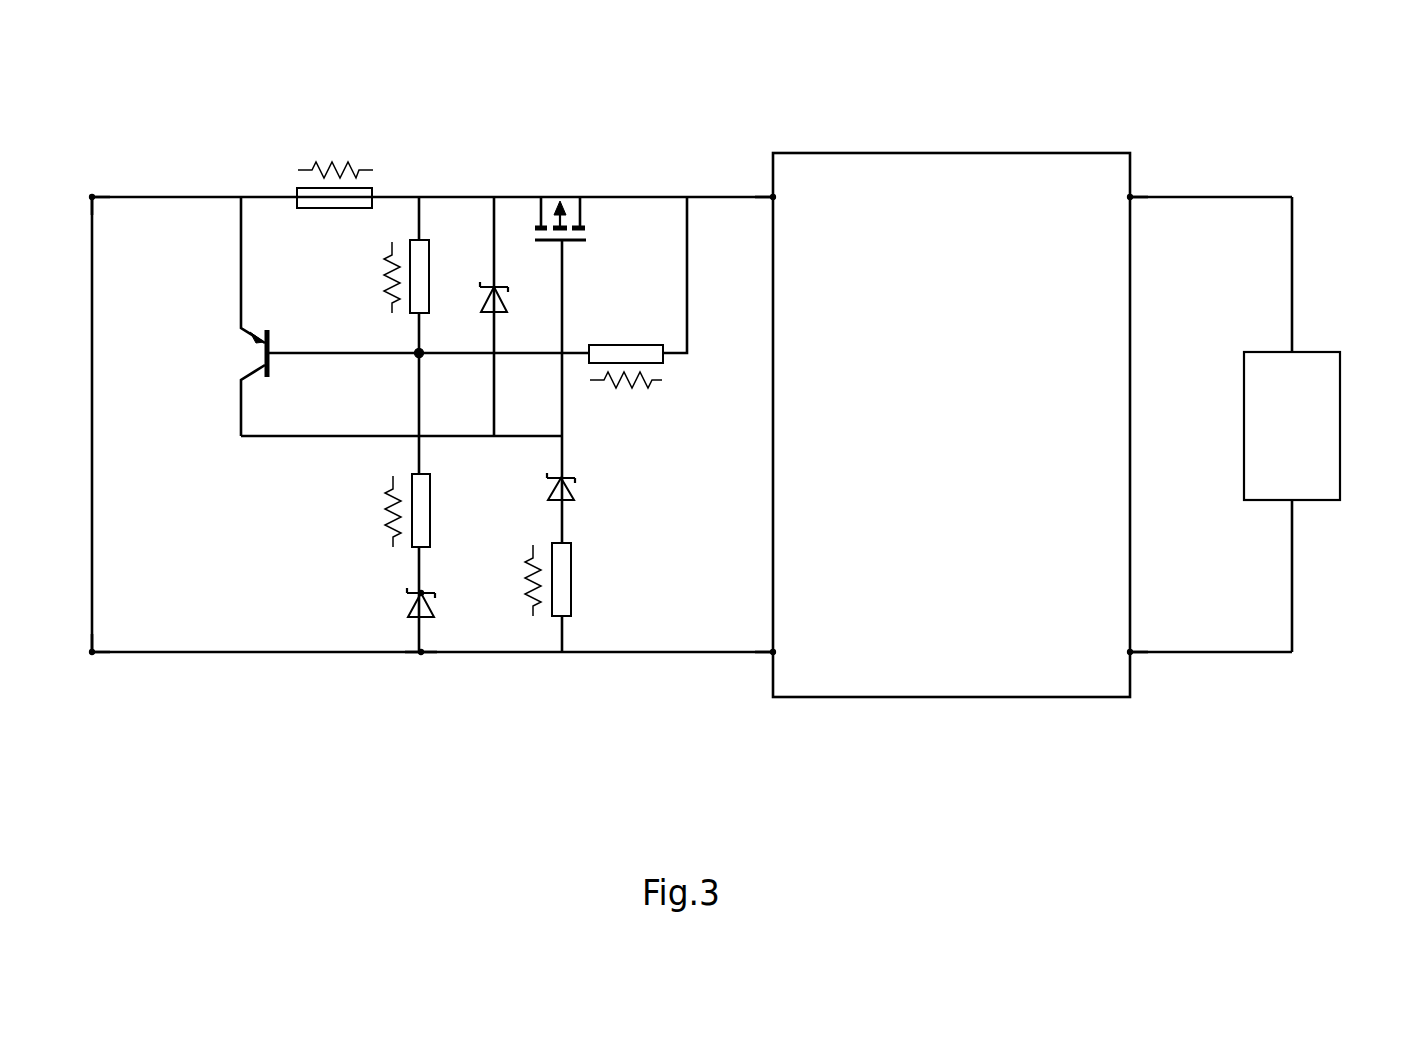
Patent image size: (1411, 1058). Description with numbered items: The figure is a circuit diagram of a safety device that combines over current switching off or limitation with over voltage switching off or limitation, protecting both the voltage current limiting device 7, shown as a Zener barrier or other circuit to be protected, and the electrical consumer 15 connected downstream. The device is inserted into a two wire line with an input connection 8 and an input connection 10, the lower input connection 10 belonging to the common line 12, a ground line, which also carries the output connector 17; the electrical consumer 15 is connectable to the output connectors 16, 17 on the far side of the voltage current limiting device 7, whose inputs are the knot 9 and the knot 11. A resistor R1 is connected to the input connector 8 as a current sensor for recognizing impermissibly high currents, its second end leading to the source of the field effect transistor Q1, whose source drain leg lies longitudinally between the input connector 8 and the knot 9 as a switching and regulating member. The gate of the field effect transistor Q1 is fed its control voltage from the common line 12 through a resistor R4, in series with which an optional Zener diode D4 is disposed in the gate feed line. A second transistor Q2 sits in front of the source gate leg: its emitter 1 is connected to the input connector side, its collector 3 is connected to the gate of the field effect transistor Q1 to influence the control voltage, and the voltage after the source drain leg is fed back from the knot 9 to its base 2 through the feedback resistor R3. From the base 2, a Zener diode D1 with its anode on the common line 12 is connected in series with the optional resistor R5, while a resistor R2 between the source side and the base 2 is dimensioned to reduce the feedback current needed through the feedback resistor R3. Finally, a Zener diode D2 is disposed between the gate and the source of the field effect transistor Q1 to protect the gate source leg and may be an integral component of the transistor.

The voltage current limiting device 7 is at (930, 153).
The input connection 8 is at (92, 197).
The knot 9 is at (773, 197).
The input connection 10 is at (92, 652).
The knot 11 is at (773, 652).
The common line 12 is at (421, 652).
The electrical consumer 15 is at (1341, 423).
The output connector 16 is at (1130, 197).
The output connector 17 is at (1131, 652).
The emitter of transistor Q2 1 is at (224, 319).
The base of transistor Q2 2 is at (288, 337).
The collector of transistor Q2 3 is at (224, 385).
The field effect transistor Q1 is at (563, 206).
The transistor Q2 is at (321, 316).
The resistor R1 is at (335, 199).
The resistor R2 is at (423, 276).
The resistor R3 is at (626, 352).
The resistor R4 is at (567, 579).
The resistor R5 is at (427, 510).
The Zener diode D1 is at (441, 602).
The Zener diode D2 is at (513, 299).
The Zener diode D4 is at (581, 487).